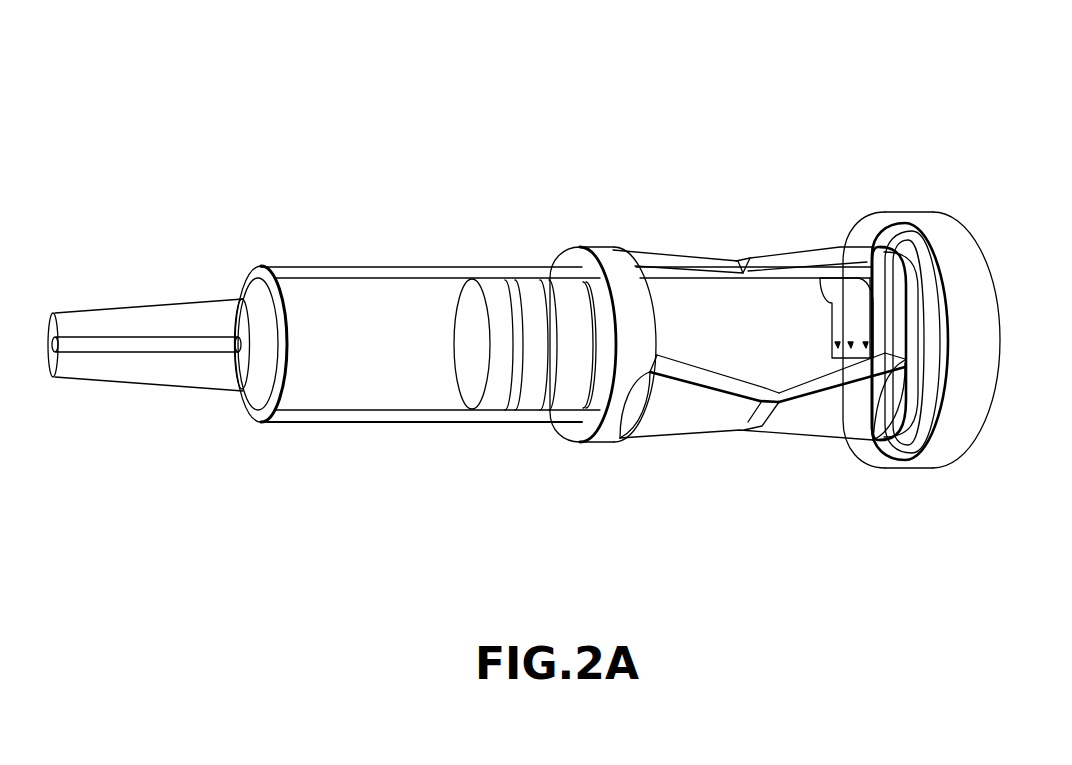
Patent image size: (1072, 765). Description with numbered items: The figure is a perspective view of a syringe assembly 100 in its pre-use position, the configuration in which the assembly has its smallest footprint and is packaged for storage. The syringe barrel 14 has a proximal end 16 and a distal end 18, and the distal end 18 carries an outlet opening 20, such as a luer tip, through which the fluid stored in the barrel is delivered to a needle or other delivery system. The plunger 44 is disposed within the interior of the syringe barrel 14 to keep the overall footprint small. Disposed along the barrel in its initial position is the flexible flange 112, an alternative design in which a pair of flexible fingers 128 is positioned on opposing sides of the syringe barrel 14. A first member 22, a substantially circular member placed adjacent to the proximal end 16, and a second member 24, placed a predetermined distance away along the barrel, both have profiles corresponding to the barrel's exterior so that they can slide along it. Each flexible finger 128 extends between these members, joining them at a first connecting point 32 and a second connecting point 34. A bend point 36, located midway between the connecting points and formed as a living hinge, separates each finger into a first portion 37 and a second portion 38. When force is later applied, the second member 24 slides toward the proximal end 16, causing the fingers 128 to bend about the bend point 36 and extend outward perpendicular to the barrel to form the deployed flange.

The syringe assembly 100 is at (470, 121).
The flexible flange 112 is at (575, 187).
The bend point 36 is at (736, 261).
The flexible fingers 128 is at (800, 252).
The proximal end 16 is at (843, 317).
The first member 22 is at (897, 267).
The first connecting point 32 is at (885, 410).
The first portion 37 is at (810, 418).
The second portion 38 is at (705, 417).
The second member 24 is at (624, 370).
The second connecting point 34 is at (650, 372).
The plunger 44 is at (507, 385).
The syringe barrel 14 is at (440, 398).
The distal end 18 is at (307, 393).
The outlet opening 20 is at (120, 368).